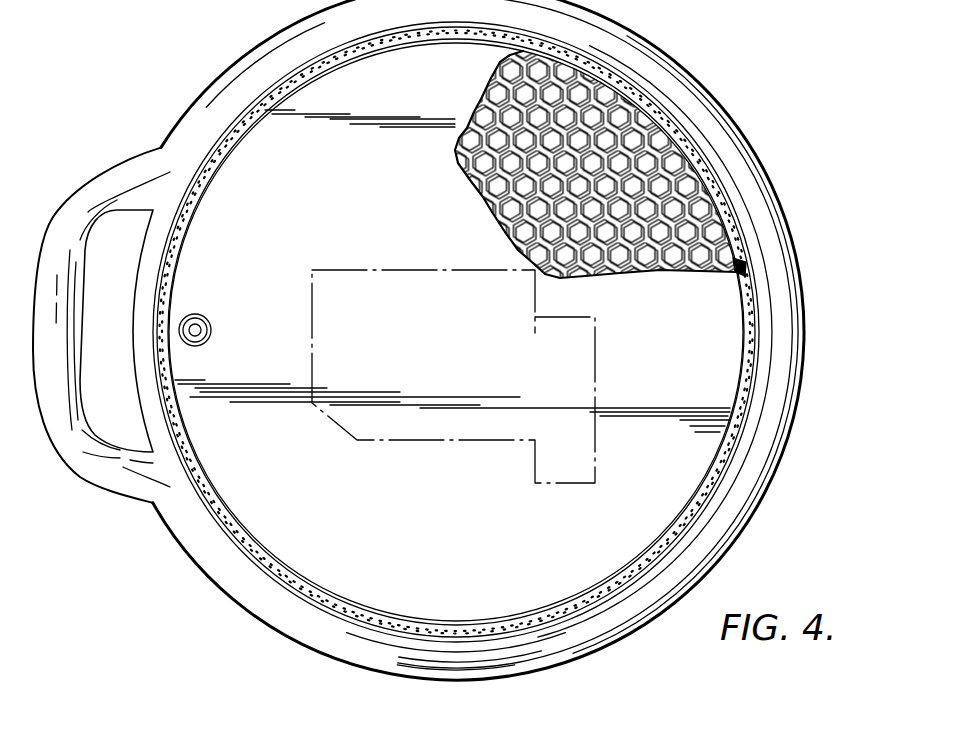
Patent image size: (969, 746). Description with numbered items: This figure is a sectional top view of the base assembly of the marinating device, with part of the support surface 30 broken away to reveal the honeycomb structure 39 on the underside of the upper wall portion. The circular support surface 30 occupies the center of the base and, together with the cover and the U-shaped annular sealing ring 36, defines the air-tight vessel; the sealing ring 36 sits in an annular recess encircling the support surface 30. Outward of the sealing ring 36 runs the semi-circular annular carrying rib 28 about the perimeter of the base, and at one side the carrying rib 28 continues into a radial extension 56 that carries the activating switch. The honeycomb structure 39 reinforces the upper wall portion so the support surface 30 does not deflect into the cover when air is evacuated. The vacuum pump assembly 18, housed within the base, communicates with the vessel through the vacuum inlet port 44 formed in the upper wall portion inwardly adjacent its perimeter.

The vacuum pump assembly 18 is at (332, 267).
The carrying rib 28 is at (782, 208).
The support surface 30 is at (400, 228).
The sealing ring 36 is at (755, 302).
The honeycomb structure 39 is at (641, 158).
The vacuum inlet port 44 is at (222, 278).
The radial extension 56 is at (98, 487).